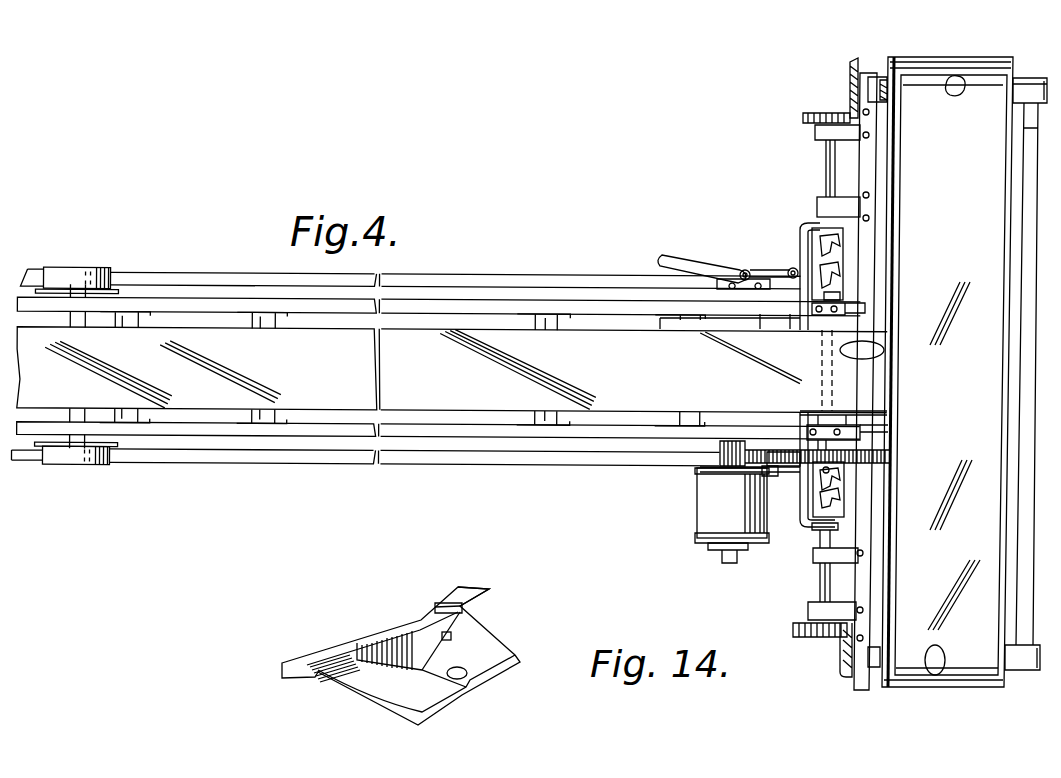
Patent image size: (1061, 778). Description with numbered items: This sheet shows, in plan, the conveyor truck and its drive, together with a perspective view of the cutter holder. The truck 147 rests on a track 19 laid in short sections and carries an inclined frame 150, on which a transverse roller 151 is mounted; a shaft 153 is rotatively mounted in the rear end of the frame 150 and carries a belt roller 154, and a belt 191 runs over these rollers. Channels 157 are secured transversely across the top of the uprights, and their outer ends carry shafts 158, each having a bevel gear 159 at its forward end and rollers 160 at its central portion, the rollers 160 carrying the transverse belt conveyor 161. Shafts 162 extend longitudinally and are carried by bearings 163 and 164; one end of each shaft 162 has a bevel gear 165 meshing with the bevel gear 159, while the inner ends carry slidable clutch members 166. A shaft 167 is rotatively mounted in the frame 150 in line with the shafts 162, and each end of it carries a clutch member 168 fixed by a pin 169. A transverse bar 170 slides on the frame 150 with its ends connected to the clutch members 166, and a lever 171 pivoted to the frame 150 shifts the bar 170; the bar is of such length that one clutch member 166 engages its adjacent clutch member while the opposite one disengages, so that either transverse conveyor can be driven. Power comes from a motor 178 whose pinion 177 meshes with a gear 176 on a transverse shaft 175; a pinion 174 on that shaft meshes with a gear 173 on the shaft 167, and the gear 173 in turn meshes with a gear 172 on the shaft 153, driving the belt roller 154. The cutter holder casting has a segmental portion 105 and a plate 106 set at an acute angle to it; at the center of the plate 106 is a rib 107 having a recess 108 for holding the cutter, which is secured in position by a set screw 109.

In FIG. 4, the track 19 is at (328, 456).
In FIG. 4, the truck 147 is at (450, 428).
In FIG. 4, the inclined frame 150 is at (763, 315).
In FIG. 4, the transverse roller 151 is at (263, 328).
In FIG. 4, the shaft 153 is at (860, 443).
In FIG. 4, the belt roller 154 is at (898, 422).
In FIG. 4, the channel 157 is at (870, 180).
In FIG. 4, the shaft 158 is at (885, 73).
In FIG. 4, the bevel gear 159 is at (850, 77).
In FIG. 4, the roller 160 is at (962, 98).
In FIG. 4, the transverse belt conveyor 161 is at (951, 456).
In FIG. 4, the shaft 162 is at (826, 163).
In FIG. 4, the bearing 163 is at (825, 135).
In FIG. 4, the bearing 164 is at (830, 556).
In FIG. 4, the bevel gear 165 is at (830, 100).
In FIG. 4, the slidable clutch member 166 is at (846, 256).
In FIG. 4, the shaft 167 is at (830, 321).
In FIG. 4, the clutch member 168 is at (846, 280).
In FIG. 4, the pin 169 is at (838, 478).
In FIG. 4, the transverse bar 170 is at (800, 243).
In FIG. 4, the lever 171 is at (668, 257).
In FIG. 4, the gear 172 is at (888, 462).
In FIG. 4, the gear 173 is at (825, 453).
In FIG. 4, the pinion 174 is at (773, 477).
In FIG. 4, the transverse shaft 175 is at (777, 411).
In FIG. 4, the gear 176 is at (770, 463).
In FIG. 4, the pinion 177 is at (722, 448).
In FIG. 4, the motor 178 is at (732, 515).
In FIG. 4, the belt 191 is at (452, 370).
In FIG. 14, the segmental portion 105 is at (437, 663).
In FIG. 14, the plate 106 is at (468, 594).
In FIG. 14, the rib 107 is at (388, 650).
In FIG. 14, the recess 108 is at (460, 619).
In FIG. 14, the set screw 109 is at (462, 637).